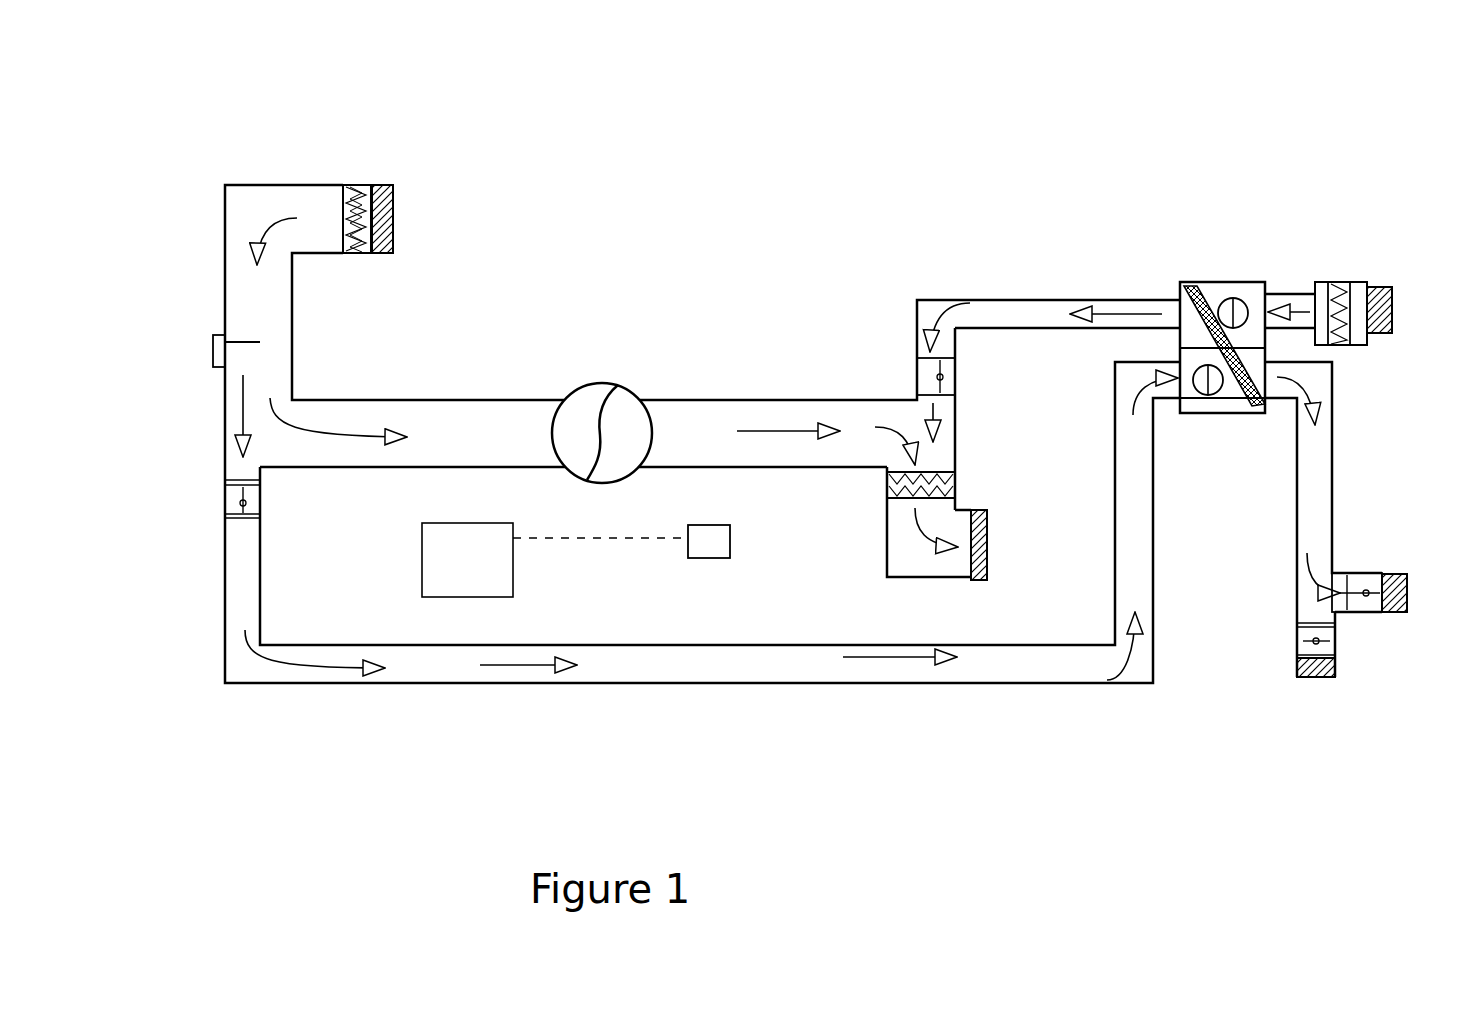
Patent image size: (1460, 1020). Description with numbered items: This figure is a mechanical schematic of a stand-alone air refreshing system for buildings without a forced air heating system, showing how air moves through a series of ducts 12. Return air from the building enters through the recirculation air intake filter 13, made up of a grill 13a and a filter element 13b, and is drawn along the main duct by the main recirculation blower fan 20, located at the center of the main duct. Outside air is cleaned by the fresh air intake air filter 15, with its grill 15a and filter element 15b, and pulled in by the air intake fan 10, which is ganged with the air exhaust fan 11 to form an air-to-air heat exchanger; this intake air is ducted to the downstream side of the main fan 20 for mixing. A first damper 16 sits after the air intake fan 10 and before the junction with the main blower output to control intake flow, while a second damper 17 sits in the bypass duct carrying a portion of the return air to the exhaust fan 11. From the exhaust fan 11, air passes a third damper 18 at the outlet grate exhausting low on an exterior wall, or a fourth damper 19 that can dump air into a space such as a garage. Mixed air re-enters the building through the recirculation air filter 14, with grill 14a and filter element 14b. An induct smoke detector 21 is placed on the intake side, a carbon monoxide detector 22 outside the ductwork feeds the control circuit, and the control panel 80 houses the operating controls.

The air intake fan 10 is at (1228, 339).
The air exhaust fan 11 is at (1228, 418).
The ducts 12 is at (422, 385).
The recirculation air intake filter 13 is at (404, 166).
The grill 13a is at (393, 217).
The filter element 13b is at (362, 183).
The recirculation air filter 14 is at (948, 504).
The grill 14a is at (990, 545).
The filter element 14b is at (885, 497).
The fresh air intake air filter 15 is at (1380, 232).
The grill 15a is at (1390, 300).
The filter element 15b is at (1336, 285).
The first damper 16 is at (925, 380).
The second damper 17 is at (224, 500).
The third damper 18 is at (1358, 572).
The fourth damper 19 is at (1297, 642).
The main recirculation blower fan 20 is at (612, 385).
The induct smoke detector 21 is at (213, 340).
The carbon monoxide detector 22 is at (732, 545).
The control panel 80 is at (420, 553).